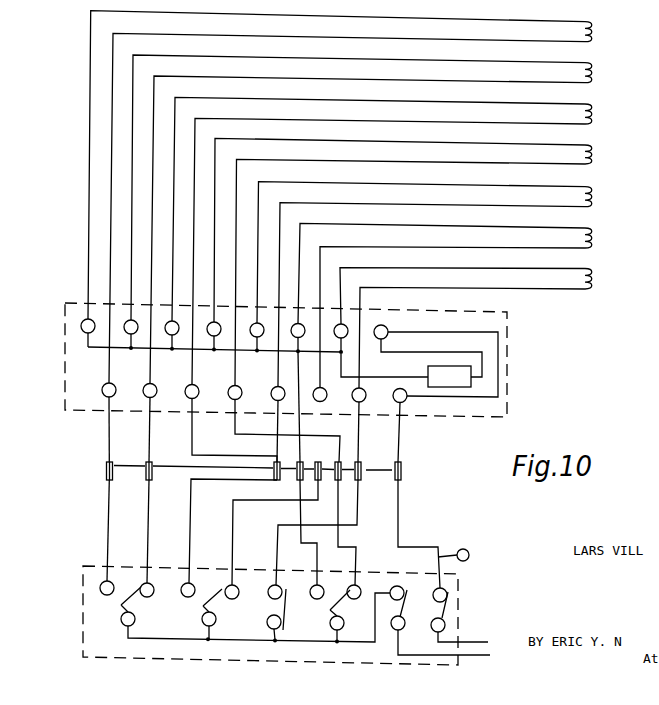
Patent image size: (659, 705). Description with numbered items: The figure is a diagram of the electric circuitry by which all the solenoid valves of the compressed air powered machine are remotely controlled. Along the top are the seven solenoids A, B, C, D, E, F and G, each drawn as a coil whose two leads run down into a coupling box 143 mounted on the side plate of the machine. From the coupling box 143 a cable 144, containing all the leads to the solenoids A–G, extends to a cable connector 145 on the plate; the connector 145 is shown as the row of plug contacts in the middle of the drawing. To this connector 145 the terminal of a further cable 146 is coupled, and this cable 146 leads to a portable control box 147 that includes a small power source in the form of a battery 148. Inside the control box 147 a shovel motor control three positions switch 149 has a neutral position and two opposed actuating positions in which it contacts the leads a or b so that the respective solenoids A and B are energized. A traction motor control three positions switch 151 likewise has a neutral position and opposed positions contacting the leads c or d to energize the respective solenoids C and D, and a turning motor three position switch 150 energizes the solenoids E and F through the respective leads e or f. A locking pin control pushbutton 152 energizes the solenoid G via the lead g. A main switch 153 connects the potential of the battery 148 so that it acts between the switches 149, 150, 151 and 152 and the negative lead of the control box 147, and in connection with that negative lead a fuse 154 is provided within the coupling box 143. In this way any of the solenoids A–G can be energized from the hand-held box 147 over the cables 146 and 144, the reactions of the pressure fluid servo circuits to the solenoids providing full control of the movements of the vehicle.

The coupling box 143 is at (82, 363).
The cable 144 is at (102, 460).
The cable connector 145 is at (373, 470).
The cable 146 is at (254, 470).
The portable control box 147 is at (286, 634).
The battery 148 is at (498, 642).
The shovel motor control three positions switch 149 is at (119, 584).
The turning motor three position switch 150 is at (200, 583).
The traction motor control three positions switch 151 is at (328, 596).
The locking pin control pushbutton 152 is at (283, 630).
The main switch 153 is at (408, 611).
The fuse 154 is at (462, 375).
The solenoid A is at (596, 32).
The solenoid B is at (596, 73).
The solenoid C is at (596, 115).
The solenoid D is at (596, 155).
The solenoid E is at (596, 197).
The solenoid F is at (596, 239).
The solenoid G is at (596, 280).
The lead a is at (110, 506).
The lead b is at (147, 533).
The lead c is at (310, 547).
The lead d is at (357, 555).
The lead e is at (190, 533).
The lead f is at (232, 535).
The lead g is at (278, 538).